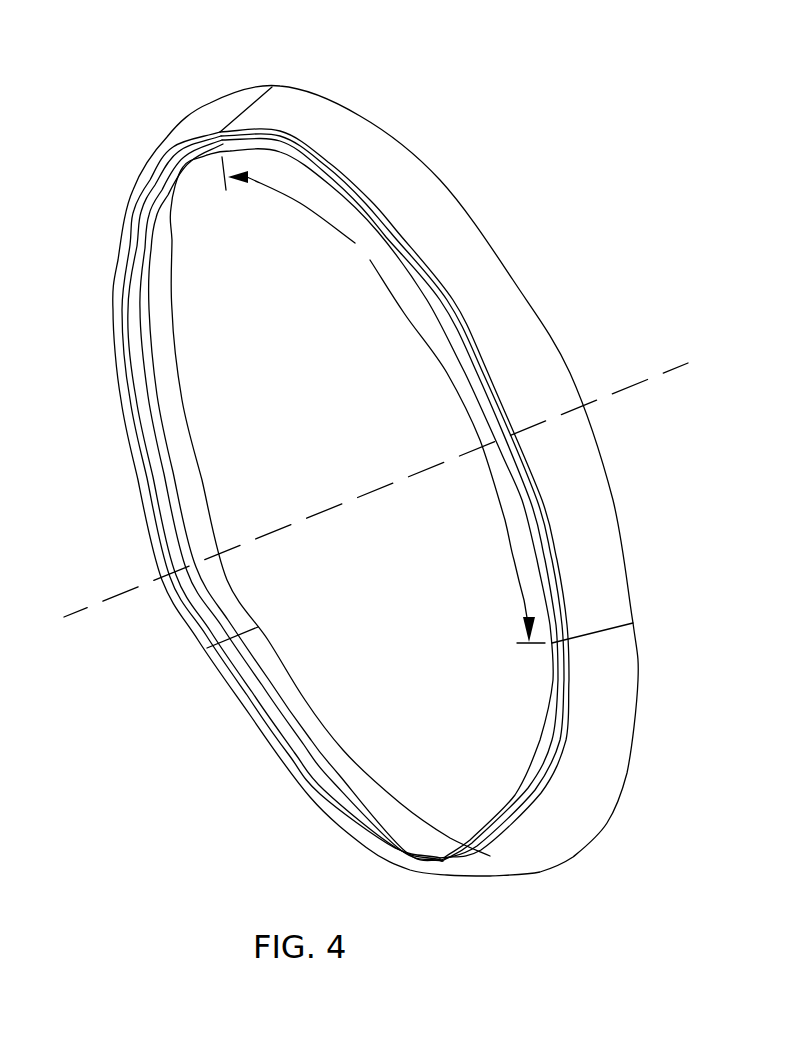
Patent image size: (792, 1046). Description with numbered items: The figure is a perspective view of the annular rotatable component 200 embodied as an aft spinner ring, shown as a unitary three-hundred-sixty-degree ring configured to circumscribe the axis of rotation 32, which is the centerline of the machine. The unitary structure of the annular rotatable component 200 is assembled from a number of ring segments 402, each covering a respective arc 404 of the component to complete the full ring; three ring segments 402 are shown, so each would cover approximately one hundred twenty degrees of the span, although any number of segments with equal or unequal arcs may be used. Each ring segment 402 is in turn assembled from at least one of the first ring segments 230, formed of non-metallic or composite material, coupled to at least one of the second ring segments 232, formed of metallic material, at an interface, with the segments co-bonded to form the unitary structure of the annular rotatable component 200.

The annular rotatable component 200 is at (390, 457).
The first ring segments 230 is at (450, 224).
The second ring segments 232 is at (388, 231).
The ring segments 402 is at (531, 305).
The arc 404 is at (437, 354).
The axis of rotation 32 is at (680, 367).